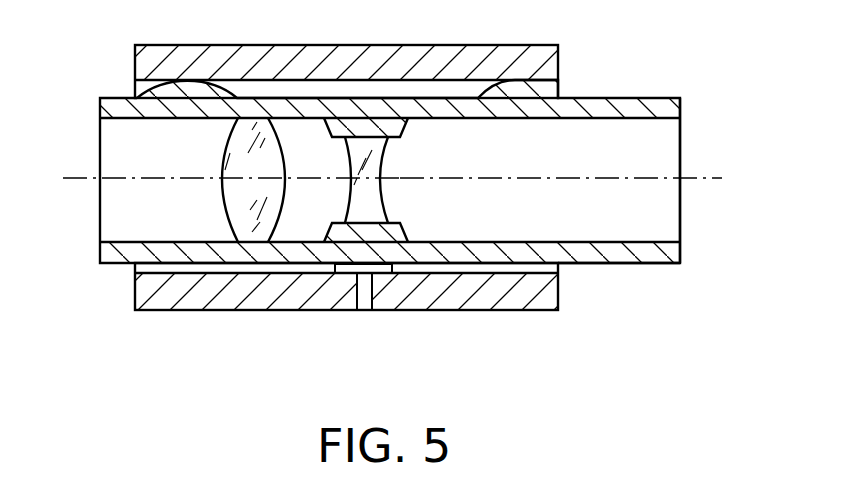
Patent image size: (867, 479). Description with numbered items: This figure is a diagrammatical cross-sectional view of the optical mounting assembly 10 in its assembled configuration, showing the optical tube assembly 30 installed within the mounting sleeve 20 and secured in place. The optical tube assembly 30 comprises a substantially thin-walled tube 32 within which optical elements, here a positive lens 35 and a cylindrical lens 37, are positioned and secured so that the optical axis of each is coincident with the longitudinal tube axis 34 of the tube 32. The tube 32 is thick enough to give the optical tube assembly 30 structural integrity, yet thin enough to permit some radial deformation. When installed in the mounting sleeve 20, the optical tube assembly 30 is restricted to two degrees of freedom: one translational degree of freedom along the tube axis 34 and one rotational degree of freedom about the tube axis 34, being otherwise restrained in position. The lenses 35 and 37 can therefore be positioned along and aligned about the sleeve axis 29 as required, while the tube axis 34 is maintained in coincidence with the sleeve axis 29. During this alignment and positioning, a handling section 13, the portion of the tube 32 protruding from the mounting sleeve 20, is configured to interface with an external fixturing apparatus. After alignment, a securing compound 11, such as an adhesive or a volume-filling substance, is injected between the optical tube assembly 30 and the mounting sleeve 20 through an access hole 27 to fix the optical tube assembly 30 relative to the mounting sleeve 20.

The optical mounting assembly 10 is at (396, 370).
The securing compound 11 is at (395, 267).
The handling section 13 is at (650, 98).
The mounting sleeve 20 is at (562, 45).
The access hole 27 is at (352, 292).
The sleeve axis 29 is at (93, 176).
The optical tube assembly 30 is at (680, 262).
The tube 32 is at (682, 108).
The longitudinal tube axis 34 is at (698, 178).
The positive lens 35 is at (223, 207).
The cylindrical lens 37 is at (383, 197).